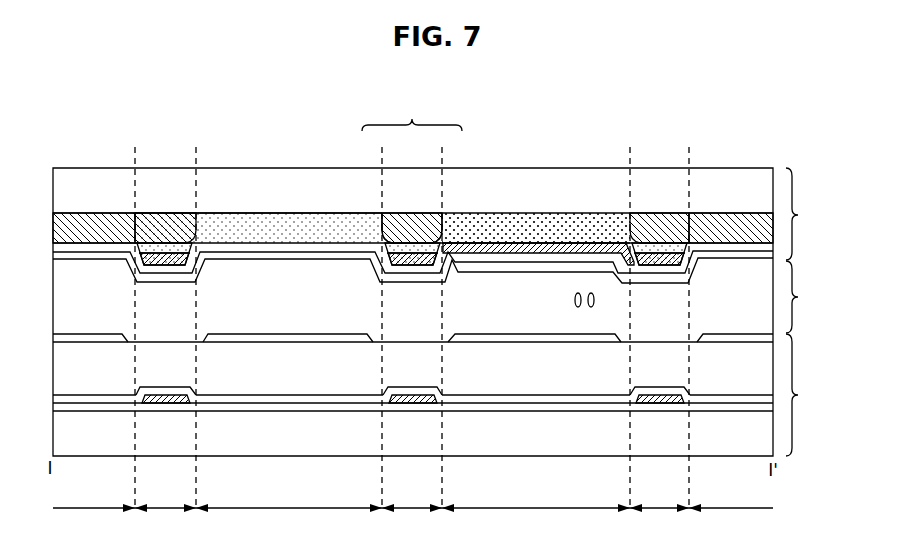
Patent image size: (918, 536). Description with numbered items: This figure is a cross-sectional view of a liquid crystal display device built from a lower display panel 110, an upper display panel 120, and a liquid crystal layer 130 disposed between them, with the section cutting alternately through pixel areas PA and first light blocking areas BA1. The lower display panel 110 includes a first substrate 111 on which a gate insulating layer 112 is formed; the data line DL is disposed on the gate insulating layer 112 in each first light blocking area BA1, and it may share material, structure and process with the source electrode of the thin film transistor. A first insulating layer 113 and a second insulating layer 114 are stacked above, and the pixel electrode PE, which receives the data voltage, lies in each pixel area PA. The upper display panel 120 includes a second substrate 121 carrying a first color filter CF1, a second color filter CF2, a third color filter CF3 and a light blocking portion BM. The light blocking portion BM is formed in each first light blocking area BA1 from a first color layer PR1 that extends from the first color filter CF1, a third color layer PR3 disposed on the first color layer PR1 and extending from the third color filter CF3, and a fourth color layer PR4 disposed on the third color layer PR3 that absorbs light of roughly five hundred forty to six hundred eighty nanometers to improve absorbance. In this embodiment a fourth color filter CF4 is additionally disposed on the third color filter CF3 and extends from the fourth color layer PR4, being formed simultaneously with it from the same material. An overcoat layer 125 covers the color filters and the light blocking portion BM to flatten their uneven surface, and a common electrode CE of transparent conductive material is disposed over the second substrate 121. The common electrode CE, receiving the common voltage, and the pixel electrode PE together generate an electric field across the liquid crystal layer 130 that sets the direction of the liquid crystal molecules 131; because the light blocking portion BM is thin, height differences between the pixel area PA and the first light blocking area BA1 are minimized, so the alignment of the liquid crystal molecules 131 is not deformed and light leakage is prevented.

The second substrate 121 is at (312, 187).
The first color filter CF1 is at (93, 223).
The second color filter CF2 is at (268, 225).
The third color filter CF3 is at (515, 223).
The fourth color filter CF4 is at (555, 247).
The first color layer PR1 is at (162, 223).
The third color layer PR3 is at (400, 237).
The fourth color layer PR4 is at (425, 238).
The light blocking portion BM is at (412, 182).
The overcoat layer 125 is at (223, 247).
The common electrode CE is at (593, 263).
The liquid crystal molecules 131 is at (592, 307).
The pixel electrode PE is at (245, 338).
The second insulating layer 114 is at (542, 378).
The first insulating layer 113 is at (492, 400).
The data line DL is at (410, 405).
The gate insulating layer 112 is at (347, 410).
The first substrate 111 is at (295, 438).
The upper display panel 120 is at (442, 214).
The liquid crystal layer 130 is at (442, 296).
The lower display panel 110 is at (442, 394).
The first light blocking area BA1 is at (413, 341).
The pixel area PA is at (413, 528).